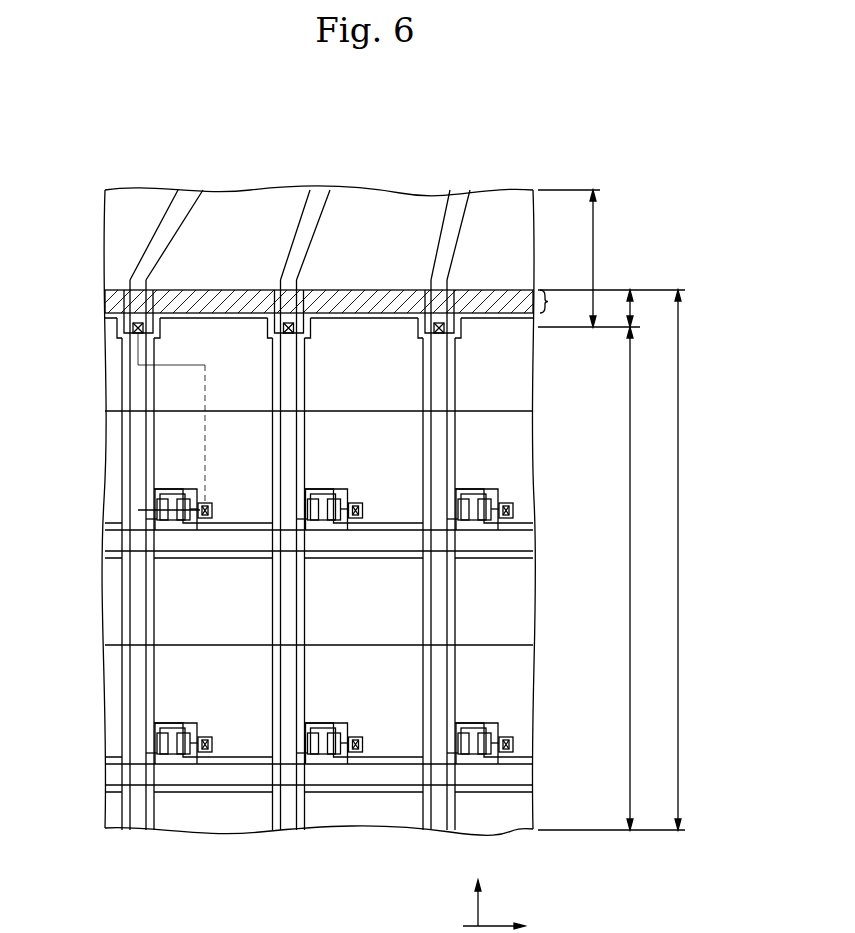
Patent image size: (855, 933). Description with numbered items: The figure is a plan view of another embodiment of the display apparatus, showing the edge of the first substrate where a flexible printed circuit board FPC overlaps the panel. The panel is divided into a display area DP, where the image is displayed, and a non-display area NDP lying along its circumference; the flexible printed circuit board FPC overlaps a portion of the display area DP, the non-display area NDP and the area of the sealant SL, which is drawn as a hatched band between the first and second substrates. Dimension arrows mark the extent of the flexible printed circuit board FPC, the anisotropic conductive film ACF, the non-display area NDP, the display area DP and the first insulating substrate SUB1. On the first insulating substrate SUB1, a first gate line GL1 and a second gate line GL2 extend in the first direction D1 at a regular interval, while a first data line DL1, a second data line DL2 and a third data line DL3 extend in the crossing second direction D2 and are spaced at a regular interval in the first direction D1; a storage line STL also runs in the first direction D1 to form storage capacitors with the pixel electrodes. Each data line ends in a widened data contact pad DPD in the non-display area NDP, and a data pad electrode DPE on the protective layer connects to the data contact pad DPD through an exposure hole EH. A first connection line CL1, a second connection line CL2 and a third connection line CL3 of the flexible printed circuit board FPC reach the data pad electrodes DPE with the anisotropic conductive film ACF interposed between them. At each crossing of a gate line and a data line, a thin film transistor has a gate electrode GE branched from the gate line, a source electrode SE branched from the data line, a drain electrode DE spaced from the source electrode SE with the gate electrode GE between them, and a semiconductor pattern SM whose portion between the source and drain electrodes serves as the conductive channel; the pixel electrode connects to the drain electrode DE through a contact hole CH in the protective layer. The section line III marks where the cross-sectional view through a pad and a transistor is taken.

The first connection line CL1 is at (192, 202).
The second connection line CL2 is at (317, 202).
The third connection line CL3 is at (458, 202).
The data pad electrode DPE is at (264, 304).
The exposure hole EH is at (288, 327).
The sealant SL is at (112, 300).
The data contact pad DPD is at (116, 323).
The storage line STL is at (110, 416).
The drain electrode DE is at (179, 497).
The gate electrode GE is at (157, 500).
The semiconductor pattern SM is at (160, 496).
The source electrode SE is at (157, 508).
The contact hole CH is at (208, 502).
The first gate line GL1 is at (112, 540).
The second gate line GL2 is at (112, 770).
The first data line DL1 is at (135, 612).
The second data line DL2 is at (285, 612).
The third data line DL3 is at (435, 610).
The line III-III' III is at (153, 261).
The flexible printed circuit board FPC is at (609, 258).
The anisotropic conductive film ACF is at (561, 307).
The non-display area NDP is at (647, 308).
The display area DP is at (641, 578).
The first insulating substrate SUB1 is at (701, 560).
The first direction D1 is at (506, 924).
The second direction D2 is at (479, 894).